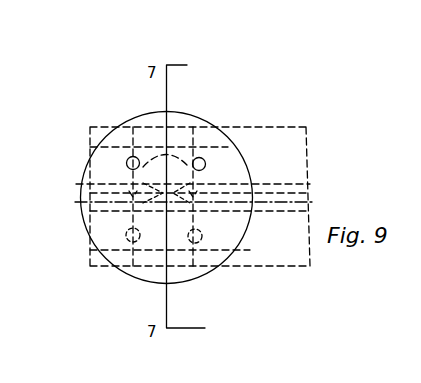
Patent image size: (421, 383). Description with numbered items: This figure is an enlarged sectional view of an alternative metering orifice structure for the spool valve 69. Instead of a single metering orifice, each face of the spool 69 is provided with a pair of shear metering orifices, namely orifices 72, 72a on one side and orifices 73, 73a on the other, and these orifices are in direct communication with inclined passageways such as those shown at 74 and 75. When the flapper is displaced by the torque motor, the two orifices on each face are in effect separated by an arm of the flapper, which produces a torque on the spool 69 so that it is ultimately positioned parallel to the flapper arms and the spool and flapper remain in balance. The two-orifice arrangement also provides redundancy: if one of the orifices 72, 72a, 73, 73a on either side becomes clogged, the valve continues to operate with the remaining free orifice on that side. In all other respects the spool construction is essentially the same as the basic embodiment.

The spool valve 69 is at (213, 246).
The shear metering orifice 72 is at (131, 157).
The shear metering orifice 72a is at (205, 159).
The shear metering orifice 73 is at (131, 240).
The shear metering orifice 73a is at (199, 244).
The inclined passageway 74 is at (152, 238).
The inclined passageway 75 is at (138, 178).